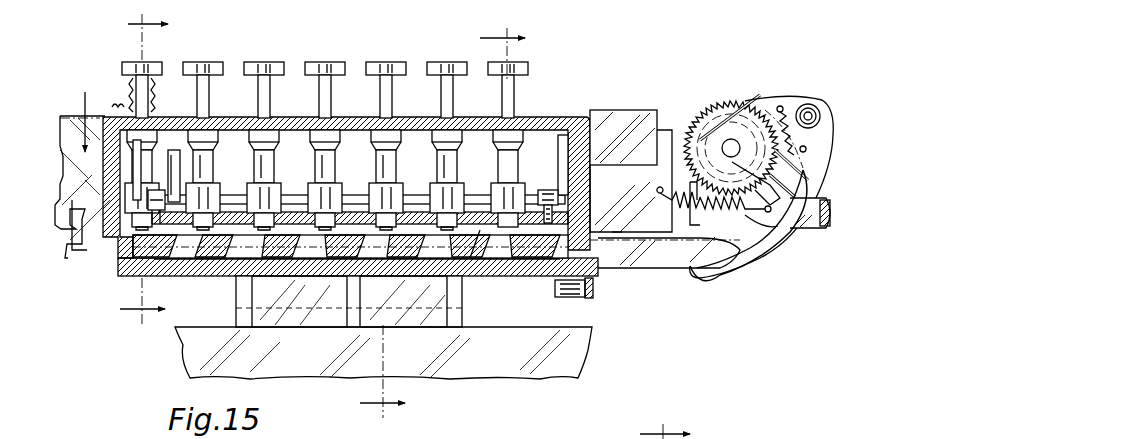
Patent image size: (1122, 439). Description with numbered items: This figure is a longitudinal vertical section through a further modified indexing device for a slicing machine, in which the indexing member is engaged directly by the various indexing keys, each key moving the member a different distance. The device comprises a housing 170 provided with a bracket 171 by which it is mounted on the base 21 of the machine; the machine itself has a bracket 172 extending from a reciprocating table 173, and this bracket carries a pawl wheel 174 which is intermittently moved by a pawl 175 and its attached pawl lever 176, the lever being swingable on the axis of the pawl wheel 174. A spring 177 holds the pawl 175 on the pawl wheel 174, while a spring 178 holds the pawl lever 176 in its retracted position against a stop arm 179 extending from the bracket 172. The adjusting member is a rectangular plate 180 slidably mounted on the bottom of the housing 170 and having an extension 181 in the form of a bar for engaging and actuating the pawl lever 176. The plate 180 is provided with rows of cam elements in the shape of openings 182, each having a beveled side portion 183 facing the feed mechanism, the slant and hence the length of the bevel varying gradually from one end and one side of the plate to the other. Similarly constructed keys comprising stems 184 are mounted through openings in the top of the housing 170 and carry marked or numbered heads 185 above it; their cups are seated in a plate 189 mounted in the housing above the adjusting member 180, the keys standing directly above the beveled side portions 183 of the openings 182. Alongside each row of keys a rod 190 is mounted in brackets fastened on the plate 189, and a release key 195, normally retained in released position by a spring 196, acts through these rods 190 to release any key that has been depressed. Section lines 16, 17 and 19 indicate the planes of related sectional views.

The section line 16 is at (427, 223).
The section line 17 is at (128, 169).
The section line 19 is at (650, 431).
The base 21 is at (178, 343).
The housing 170 is at (126, 260).
The bracket 171 is at (236, 302).
The bracket 172 is at (680, 142).
The reciprocating table 173 is at (660, 115).
The pawl wheel 174 is at (736, 102).
The pawl 175 is at (778, 101).
The pawl lever 176 is at (802, 186).
The spring 177 is at (812, 148).
The spring 178 is at (770, 240).
The stop arm 179 is at (776, 228).
The rectangular plate 180 is at (310, 270).
The extension 181 is at (632, 262).
The openings 182 is at (470, 276).
The beveled side portion 183 is at (505, 270).
The stems 184 is at (516, 92).
The heads 185 is at (525, 66).
The plate 189 is at (556, 205).
The rod 190 is at (480, 196).
The release key 195 is at (128, 85).
The spring 196 is at (160, 66).